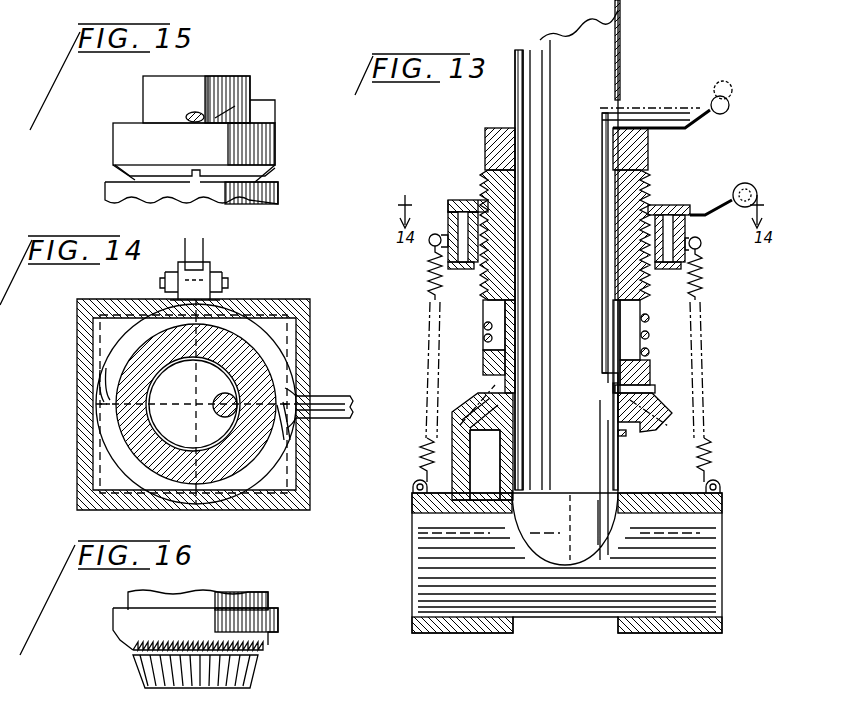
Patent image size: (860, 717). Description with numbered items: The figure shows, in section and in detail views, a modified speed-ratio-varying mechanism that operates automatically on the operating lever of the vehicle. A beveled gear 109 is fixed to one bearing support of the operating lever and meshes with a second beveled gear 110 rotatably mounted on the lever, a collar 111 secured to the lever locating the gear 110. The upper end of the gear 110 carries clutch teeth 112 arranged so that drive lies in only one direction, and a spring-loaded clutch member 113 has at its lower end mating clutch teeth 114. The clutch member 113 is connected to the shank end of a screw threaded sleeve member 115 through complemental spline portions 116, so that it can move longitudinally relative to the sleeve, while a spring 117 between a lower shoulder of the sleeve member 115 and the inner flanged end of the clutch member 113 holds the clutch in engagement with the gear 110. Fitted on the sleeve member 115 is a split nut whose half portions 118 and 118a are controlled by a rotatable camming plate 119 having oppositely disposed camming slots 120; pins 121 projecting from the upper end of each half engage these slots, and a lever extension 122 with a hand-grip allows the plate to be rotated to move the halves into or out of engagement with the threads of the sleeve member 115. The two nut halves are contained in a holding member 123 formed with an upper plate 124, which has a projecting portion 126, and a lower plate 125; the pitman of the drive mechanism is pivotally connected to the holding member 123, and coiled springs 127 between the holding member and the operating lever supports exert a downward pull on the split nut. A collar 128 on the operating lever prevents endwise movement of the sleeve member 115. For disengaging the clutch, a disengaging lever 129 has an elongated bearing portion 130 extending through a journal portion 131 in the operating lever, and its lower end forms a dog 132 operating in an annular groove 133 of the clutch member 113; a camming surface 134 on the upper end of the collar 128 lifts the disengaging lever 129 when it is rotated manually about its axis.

In FIG. 13, the beveled gear 109 is at (474, 468).
In FIG. 13, the second beveled gear 110 is at (652, 428).
In FIG. 13, the collar 111 is at (626, 437).
In FIG. 16, the clutch teeth 112 is at (255, 654).
In FIG. 16, the spring-loaded clutch member 113 is at (278, 618).
In FIG. 13, the spring-loaded clutch member 113 is at (652, 362).
In FIG. 16, the clutch teeth 114 is at (265, 640).
In FIG. 13, the screw threaded sleeve member 115 is at (652, 302).
In FIG. 13, the spline portions 116 is at (485, 347).
In FIG. 13, the spring 117 is at (650, 338).
In FIG. 14, the split nut half portion 118 is at (105, 332).
In FIG. 13, the split nut half portion 118 is at (448, 258).
In FIG. 14, the split nut half portion 118a is at (272, 328).
In FIG. 13, the split nut half portion 118a is at (702, 250).
In FIG. 14, the rotatable camming plate 119 is at (275, 358).
In FIG. 13, the rotatable camming plate 119 is at (690, 212).
In FIG. 14, the camming slots 120 is at (350, 406).
In FIG. 14, the pins 121 is at (300, 397).
In FIG. 13, the pins 121 is at (660, 205).
In FIG. 13, the lever extension 122 is at (748, 183).
In FIG. 14, the holding member 123 is at (265, 305).
In FIG. 13, the holding member 123 is at (705, 285).
In FIG. 15, the upper plate 124 is at (280, 200).
In FIG. 13, the upper plate 124 is at (448, 203).
In FIG. 13, the lower plate 125 is at (458, 270).
In FIG. 15, the projecting portion 126 is at (194, 183).
In FIG. 13, the coiled springs 127 is at (420, 465).
In FIG. 15, the collar 128 is at (277, 142).
In FIG. 13, the collar 128 is at (650, 146).
In FIG. 13, the disengaging lever 129 is at (655, 122).
In FIG. 13, the bearing portion 130 is at (603, 278).
In FIG. 13, the journal portion 131 is at (603, 186).
In FIG. 13, the dog 132 is at (610, 380).
In FIG. 13, the annular groove 133 is at (492, 420).
In FIG. 15, the camming surface 134 is at (195, 115).